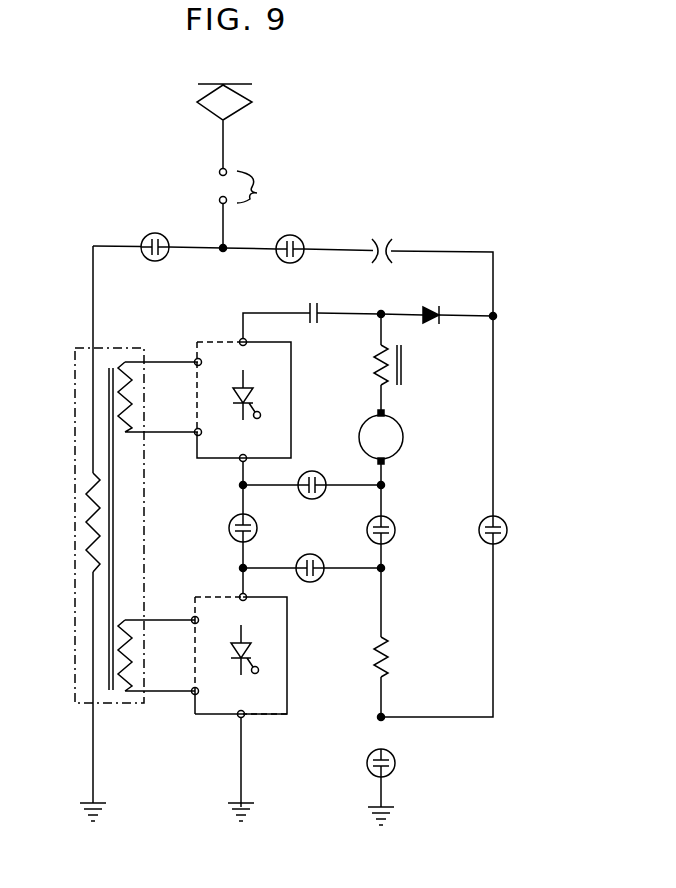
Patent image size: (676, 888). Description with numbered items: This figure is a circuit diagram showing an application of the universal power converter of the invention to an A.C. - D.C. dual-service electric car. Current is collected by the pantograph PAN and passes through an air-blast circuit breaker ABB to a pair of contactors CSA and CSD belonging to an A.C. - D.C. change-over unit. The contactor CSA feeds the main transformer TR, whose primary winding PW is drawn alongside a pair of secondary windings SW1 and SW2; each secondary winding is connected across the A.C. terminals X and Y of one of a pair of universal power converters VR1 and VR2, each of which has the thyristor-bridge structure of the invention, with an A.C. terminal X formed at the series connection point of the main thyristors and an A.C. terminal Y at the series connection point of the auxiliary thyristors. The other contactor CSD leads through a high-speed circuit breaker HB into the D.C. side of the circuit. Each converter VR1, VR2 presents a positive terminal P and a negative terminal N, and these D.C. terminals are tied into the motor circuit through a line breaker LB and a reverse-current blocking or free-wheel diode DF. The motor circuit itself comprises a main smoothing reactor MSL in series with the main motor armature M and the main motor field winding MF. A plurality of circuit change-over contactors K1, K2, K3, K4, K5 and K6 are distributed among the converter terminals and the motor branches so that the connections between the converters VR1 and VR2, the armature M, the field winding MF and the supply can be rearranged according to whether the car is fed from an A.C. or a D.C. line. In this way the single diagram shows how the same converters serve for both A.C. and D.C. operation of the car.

The pantograph PAN is at (250, 100).
The air-blast circuit breaker ABB is at (254, 190).
The contactor of the A.C. - D.C. change-over unit CSA is at (163, 226).
The contactor of the A.C. - D.C. change-over unit CSD is at (291, 235).
The high-speed circuit breaker HB is at (382, 236).
The line breaker LB is at (313, 303).
The reverse-current blocking or free-wheel diode DF is at (436, 305).
The main transformer TR is at (107, 328).
The primary winding PW is at (88, 517).
The secondary winding SW1 is at (132, 392).
The secondary winding SW2 is at (132, 656).
The universal power converter VR1 is at (317, 400).
The universal power converter VR2 is at (313, 700).
The A.C. terminal X is at (194, 358).
The A.C. terminal Y is at (194, 428).
The negative terminal N is at (247, 340).
The positive terminal P is at (246, 461).
The main smoothing reactor MSL is at (402, 369).
The main motor armature M is at (381, 437).
The circuit change-over contactor K1 is at (258, 535).
The circuit change-over contactor K2 is at (396, 538).
The circuit change-over contactor K3 is at (508, 538).
The circuit change-over contactor K4 is at (312, 473).
The circuit change-over contactor K5 is at (318, 557).
The circuit change-over contactor K6 is at (394, 772).
The main motor field winding MF is at (386, 661).